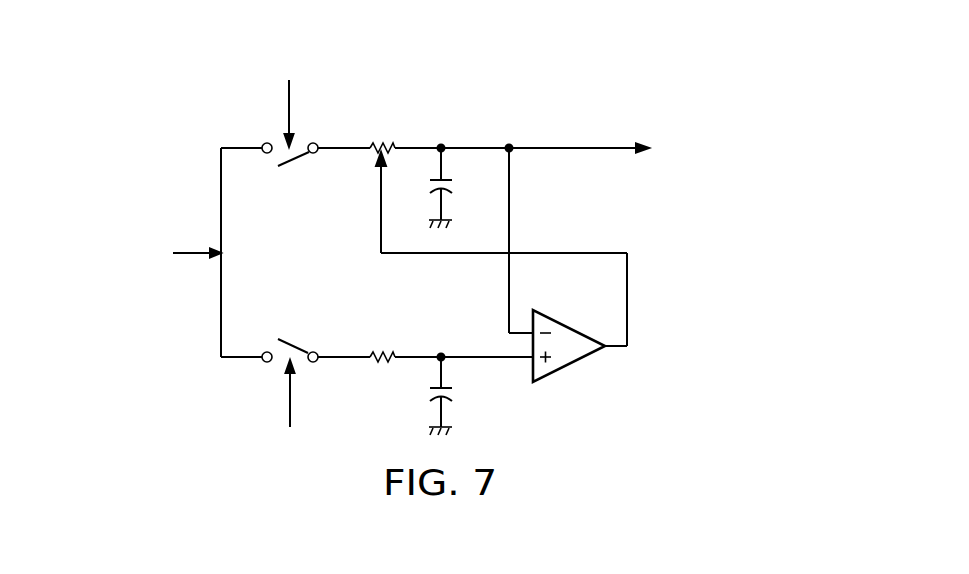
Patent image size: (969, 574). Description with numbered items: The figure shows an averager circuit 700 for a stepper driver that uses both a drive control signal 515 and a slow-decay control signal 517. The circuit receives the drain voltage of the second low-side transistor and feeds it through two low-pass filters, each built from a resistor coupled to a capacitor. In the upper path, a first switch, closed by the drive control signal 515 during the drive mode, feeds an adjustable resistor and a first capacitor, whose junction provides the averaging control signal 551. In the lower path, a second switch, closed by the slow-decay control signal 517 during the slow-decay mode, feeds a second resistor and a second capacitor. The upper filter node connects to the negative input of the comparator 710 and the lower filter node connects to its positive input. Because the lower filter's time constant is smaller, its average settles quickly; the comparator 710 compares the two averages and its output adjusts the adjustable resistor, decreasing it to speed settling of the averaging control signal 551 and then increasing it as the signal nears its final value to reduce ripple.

The averager circuit 700 is at (436, 231).
The DRV control signal 515 is at (289, 107).
The SD control signal 517 is at (289, 398).
The averaging control signal 551 is at (580, 148).
The comparator 710 is at (570, 365).